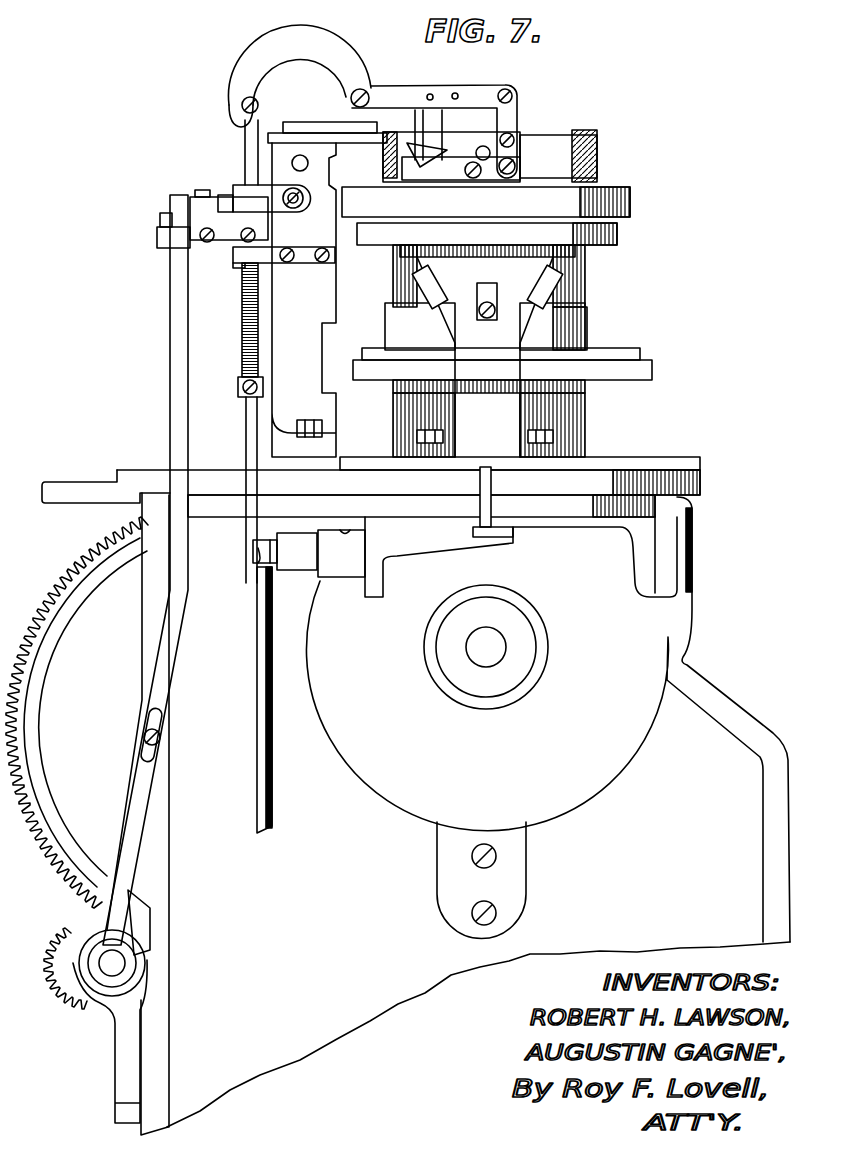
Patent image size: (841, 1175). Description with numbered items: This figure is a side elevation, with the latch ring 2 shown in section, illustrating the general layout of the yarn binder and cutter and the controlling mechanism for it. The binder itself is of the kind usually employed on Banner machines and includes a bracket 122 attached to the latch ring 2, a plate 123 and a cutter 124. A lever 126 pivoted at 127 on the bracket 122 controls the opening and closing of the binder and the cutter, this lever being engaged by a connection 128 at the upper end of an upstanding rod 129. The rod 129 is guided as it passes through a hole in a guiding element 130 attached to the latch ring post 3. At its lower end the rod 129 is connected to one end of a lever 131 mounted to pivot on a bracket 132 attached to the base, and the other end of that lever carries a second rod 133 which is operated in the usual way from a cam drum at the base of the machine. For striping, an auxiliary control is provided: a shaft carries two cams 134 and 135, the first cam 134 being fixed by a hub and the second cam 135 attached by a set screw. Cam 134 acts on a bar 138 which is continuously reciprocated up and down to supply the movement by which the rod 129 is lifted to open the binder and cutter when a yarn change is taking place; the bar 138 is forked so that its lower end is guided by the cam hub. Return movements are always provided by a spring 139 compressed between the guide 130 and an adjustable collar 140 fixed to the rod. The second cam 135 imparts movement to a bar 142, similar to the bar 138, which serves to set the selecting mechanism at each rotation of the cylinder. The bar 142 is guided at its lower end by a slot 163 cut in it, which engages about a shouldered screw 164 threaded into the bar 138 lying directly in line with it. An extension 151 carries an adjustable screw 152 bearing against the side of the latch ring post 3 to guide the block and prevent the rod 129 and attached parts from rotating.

The latch ring 2 is at (573, 138).
The latch ring post 3 is at (332, 282).
The bracket 122 is at (353, 122).
The plate 123 is at (545, 178).
The cutter 124 is at (432, 174).
The lever 126 is at (328, 55).
The pivot 127 is at (364, 99).
The connection 128 is at (267, 98).
The upstanding rod 129 is at (246, 428).
The guiding element 130 is at (243, 268).
The lever 131 is at (263, 566).
The bracket 132 is at (298, 575).
The second rod 133 is at (261, 786).
The cam 134 is at (143, 973).
The cam 135 is at (78, 967).
The bar 138 is at (148, 914).
The spring 139 is at (242, 335).
The adjustable collar 140 is at (238, 388).
The bar 142 is at (173, 660).
The extension 151 is at (264, 198).
The adjustable screw 152 is at (295, 209).
The slot 163 is at (160, 719).
The shouldered screw 164 is at (159, 742).